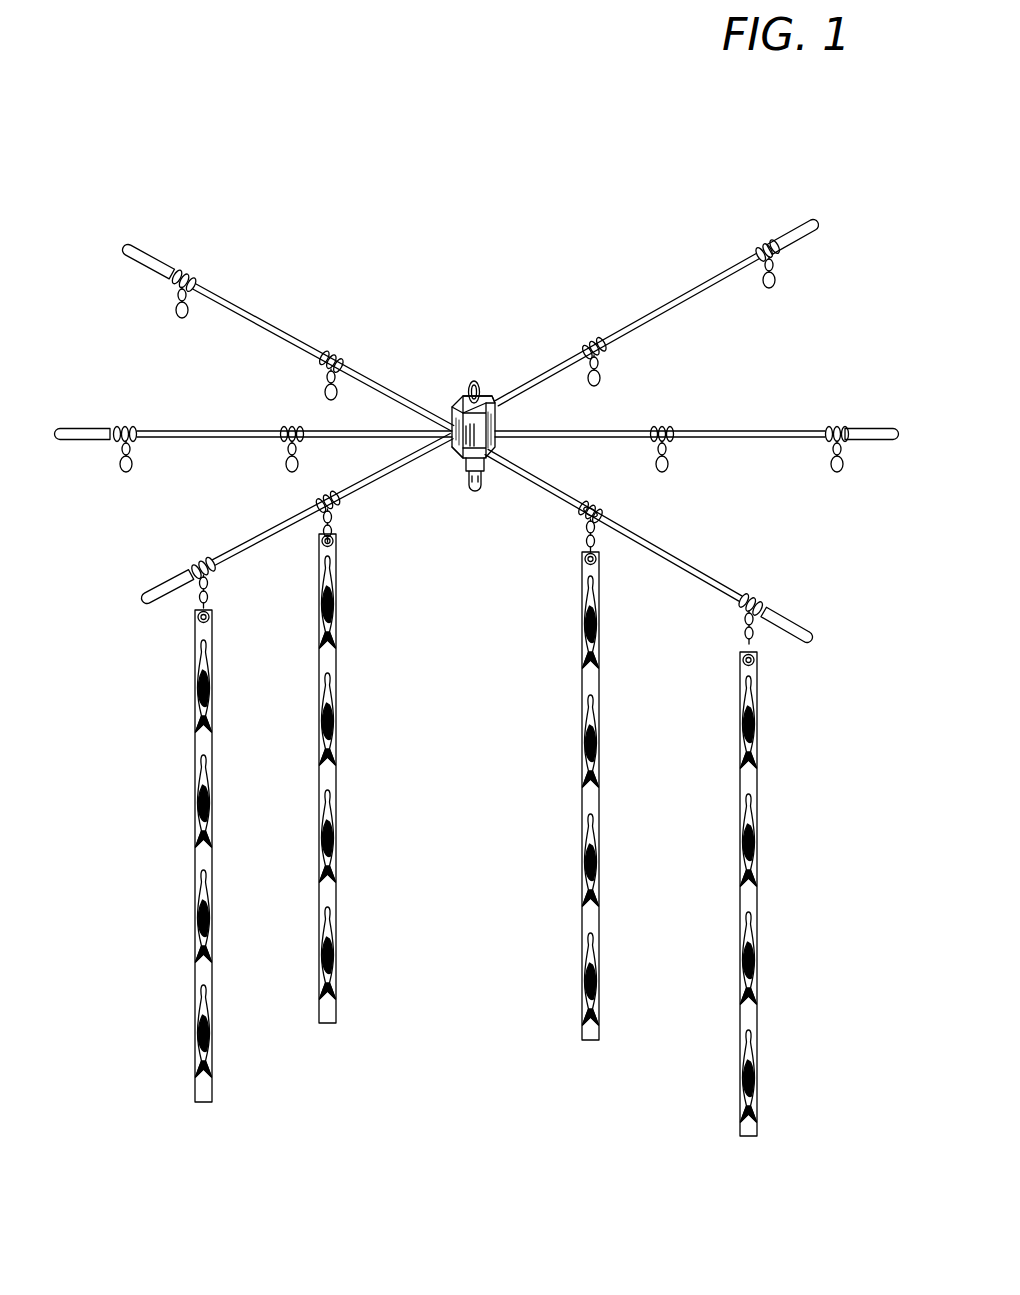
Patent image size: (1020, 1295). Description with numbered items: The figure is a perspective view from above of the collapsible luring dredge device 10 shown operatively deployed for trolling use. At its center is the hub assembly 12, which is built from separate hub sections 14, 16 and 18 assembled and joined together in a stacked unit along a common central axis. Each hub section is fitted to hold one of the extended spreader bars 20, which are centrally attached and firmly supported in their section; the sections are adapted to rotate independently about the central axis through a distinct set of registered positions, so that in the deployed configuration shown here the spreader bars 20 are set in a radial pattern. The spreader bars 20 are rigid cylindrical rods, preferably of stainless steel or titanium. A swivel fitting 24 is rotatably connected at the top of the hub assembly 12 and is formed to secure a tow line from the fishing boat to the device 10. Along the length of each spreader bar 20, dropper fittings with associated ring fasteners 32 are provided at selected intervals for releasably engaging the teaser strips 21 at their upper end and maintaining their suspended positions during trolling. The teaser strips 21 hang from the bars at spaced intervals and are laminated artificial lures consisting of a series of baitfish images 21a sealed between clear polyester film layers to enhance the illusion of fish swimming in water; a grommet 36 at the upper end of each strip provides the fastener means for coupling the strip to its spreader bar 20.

The collapsible luring dredge device 10 is at (523, 258).
The hub assembly 12 is at (483, 386).
The hub section 14 is at (452, 400).
The hub section 16 is at (500, 421).
The hub section 18 is at (457, 456).
The spreader bar 20 is at (265, 525).
The teaser strip 21 is at (582, 694).
The baitfish image 21a is at (600, 612).
The swivel fitting 24 is at (466, 381).
The ring fastener 32 is at (588, 518).
The grommet 36 is at (585, 565).